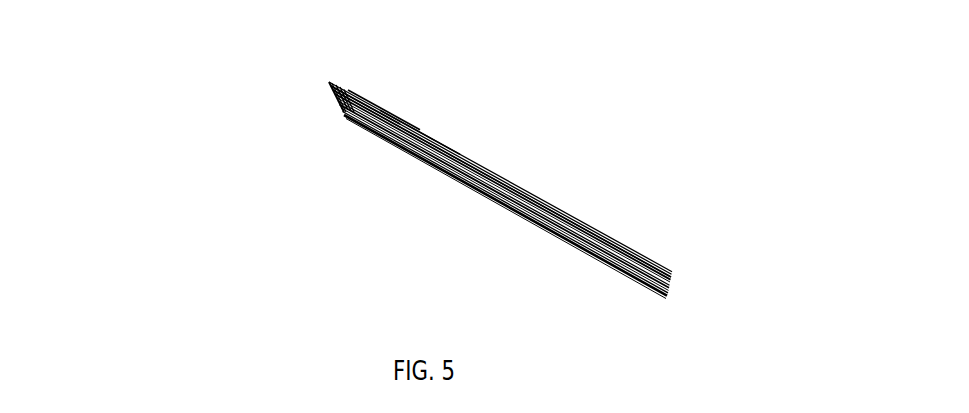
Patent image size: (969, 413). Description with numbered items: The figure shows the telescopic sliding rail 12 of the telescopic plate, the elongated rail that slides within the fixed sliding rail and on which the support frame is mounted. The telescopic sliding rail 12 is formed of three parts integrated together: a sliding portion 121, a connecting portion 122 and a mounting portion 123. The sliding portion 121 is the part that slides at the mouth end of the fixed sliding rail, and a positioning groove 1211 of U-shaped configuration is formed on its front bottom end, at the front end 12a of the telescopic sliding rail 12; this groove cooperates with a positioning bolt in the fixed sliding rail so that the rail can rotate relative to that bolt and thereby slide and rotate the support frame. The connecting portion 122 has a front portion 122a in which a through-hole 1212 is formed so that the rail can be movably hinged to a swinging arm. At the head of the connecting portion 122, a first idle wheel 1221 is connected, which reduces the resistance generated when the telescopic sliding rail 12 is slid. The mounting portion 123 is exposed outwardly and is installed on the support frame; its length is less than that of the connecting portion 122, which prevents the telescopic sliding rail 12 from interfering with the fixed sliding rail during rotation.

The telescopic sliding rail 12 is at (425, 167).
The sliding portion 121 is at (450, 147).
The positioning groove 1211 is at (355, 112).
The through-hole 1212 is at (330, 83).
The connecting portion 122 is at (352, 108).
The first idle wheel 1221 is at (330, 96).
The front portion 122a is at (355, 92).
The front end 12a is at (390, 117).
The mounting portion 123 is at (495, 208).